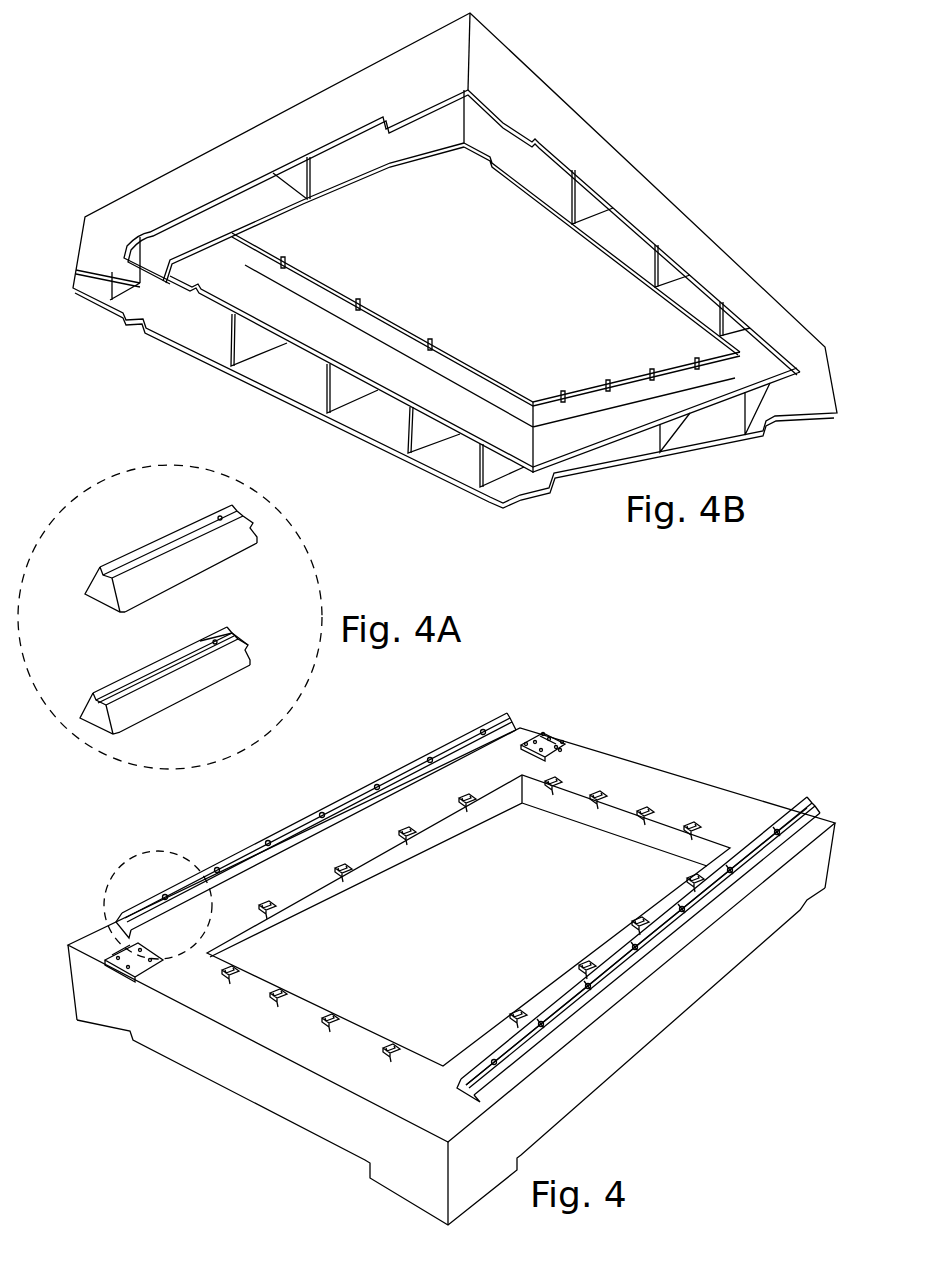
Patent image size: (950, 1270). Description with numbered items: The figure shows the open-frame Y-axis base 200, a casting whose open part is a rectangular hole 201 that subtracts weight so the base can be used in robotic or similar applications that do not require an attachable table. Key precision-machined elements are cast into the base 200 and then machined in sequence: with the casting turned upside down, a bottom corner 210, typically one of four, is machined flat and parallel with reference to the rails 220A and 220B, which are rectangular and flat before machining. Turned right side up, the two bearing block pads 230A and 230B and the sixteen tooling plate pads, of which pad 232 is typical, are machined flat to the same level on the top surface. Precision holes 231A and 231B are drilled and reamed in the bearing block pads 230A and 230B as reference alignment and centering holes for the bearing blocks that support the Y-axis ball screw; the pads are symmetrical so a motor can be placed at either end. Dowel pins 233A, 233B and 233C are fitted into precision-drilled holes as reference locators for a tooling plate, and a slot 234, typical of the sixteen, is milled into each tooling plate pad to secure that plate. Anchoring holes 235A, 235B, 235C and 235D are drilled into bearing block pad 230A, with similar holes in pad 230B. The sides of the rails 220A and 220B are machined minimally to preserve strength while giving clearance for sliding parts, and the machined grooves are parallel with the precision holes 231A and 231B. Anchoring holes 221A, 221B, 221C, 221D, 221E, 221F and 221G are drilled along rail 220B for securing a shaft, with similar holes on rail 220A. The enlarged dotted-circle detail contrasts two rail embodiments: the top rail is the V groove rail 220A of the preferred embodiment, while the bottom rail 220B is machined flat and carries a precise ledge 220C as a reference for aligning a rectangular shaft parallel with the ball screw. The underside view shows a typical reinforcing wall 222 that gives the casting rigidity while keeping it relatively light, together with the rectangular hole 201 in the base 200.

In FIG. 4B, the Y-axis base 200 is at (613, 170).
In FIG. 4, the Y-axis base 200 is at (663, 785).
In FIG. 4B, the rectangular hole 201 is at (490, 293).
In FIG. 4, the rectangular hole 201 is at (497, 915).
In FIG. 4, the bottom corner 210 is at (100, 1030).
In FIG. 4A, the V groove rail 220A is at (150, 543).
In FIG. 4, the V groove rail 220A is at (382, 783).
In FIG. 4A, the rail 220B is at (232, 635).
In FIG. 4, the rail 220B is at (783, 818).
In FIG. 4A, the ledge 220C is at (128, 673).
In FIG. 4, the anchoring hole 221A is at (490, 1090).
In FIG. 4, the anchoring hole 221B is at (545, 1028).
In FIG. 4, the anchoring hole 221C is at (600, 987).
In FIG. 4, the anchoring hole 221D is at (647, 948).
In FIG. 4, the anchoring hole 221E is at (693, 910).
In FIG. 4, the anchoring hole 221F is at (740, 870).
In FIG. 4, the anchoring hole 221G is at (777, 832).
In FIG. 4B, the reinforcing wall 222 is at (667, 278).
In FIG. 4, the bearing block pad 230A is at (546, 757).
In FIG. 4, the bearing block pad 230B is at (140, 963).
In FIG. 4, the precision hole 231A is at (553, 738).
In FIG. 4, the precision hole 231B is at (118, 955).
In FIG. 4, the tooling plate pad 232 is at (393, 1055).
In FIG. 4, the dowel pin 233A is at (232, 978).
In FIG. 4, the dowel pin 233B is at (272, 905).
In FIG. 4, the dowel pin 233C is at (405, 843).
In FIG. 4, the slot 234 is at (593, 805).
In FIG. 4, the anchoring hole 235A is at (543, 733).
In FIG. 4, the anchoring hole 235B is at (527, 738).
In FIG. 4, the anchoring hole 235C is at (563, 750).
In FIG. 4, the anchoring hole 235D is at (563, 737).